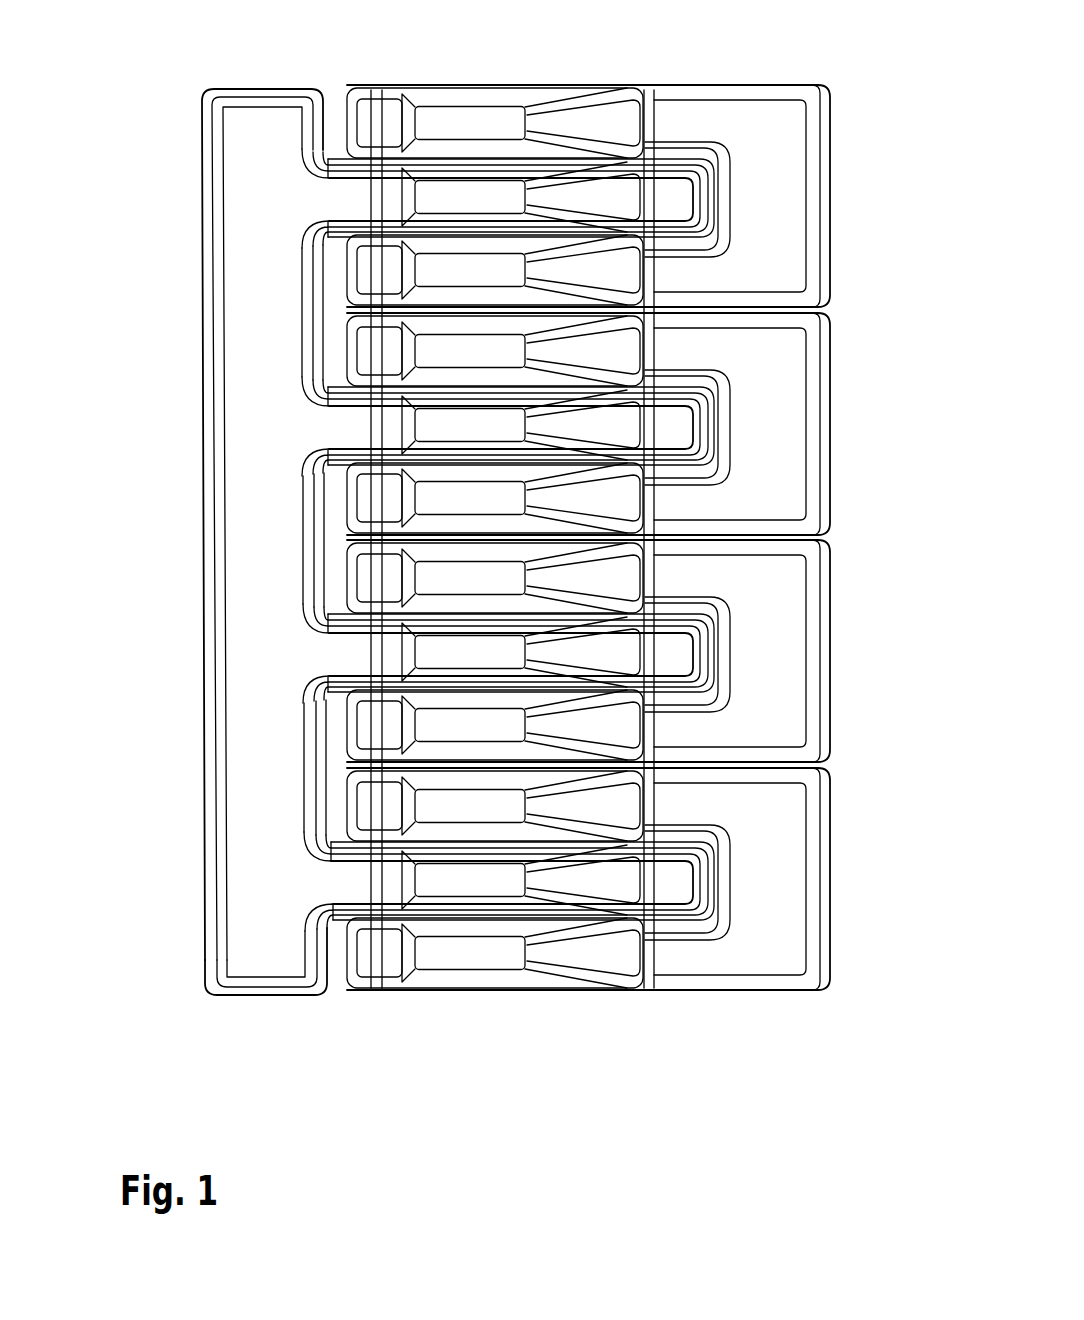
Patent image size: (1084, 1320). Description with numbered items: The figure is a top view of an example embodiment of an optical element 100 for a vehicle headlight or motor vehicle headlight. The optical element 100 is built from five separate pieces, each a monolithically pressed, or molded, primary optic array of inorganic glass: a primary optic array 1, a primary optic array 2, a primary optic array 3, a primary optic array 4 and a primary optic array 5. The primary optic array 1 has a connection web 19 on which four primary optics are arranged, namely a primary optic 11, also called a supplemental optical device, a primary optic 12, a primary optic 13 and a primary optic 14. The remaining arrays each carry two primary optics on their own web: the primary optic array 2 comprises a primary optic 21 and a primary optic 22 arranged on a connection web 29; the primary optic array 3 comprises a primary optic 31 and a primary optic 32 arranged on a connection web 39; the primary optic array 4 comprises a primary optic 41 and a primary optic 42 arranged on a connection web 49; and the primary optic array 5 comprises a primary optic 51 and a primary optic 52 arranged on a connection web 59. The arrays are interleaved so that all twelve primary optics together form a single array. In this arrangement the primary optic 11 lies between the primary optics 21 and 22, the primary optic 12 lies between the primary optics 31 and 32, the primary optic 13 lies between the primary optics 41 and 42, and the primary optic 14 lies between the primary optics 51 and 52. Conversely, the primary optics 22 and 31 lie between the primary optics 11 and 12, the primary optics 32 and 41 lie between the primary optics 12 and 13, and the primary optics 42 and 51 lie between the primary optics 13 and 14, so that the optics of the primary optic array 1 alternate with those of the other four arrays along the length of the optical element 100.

The optical element 100 is at (718, 51).
The primary optic array 1 is at (174, 620).
The primary optic 11 is at (424, 198).
The primary optic 12 is at (424, 426).
The primary optic 13 is at (424, 653).
The primary optic 14 is at (521, 955).
The connection web 19 is at (266, 960).
The primary optic array 2 is at (537, 196).
The primary optic 21 is at (389, 123).
The primary optic 22 is at (389, 270).
The connection web 29 is at (778, 117).
The primary optic array 3 is at (537, 424).
The primary optic 31 is at (389, 351).
The primary optic 32 is at (389, 498).
The connection web 39 is at (626, 424).
The primary optic array 4 is at (537, 651).
The primary optic 41 is at (389, 578).
The primary optic 42 is at (389, 725).
The connection web 49 is at (626, 651).
The primary optic array 5 is at (537, 917).
The primary optic 51 is at (389, 806).
The primary optic 52 is at (495, 992).
The connection web 59 is at (626, 879).